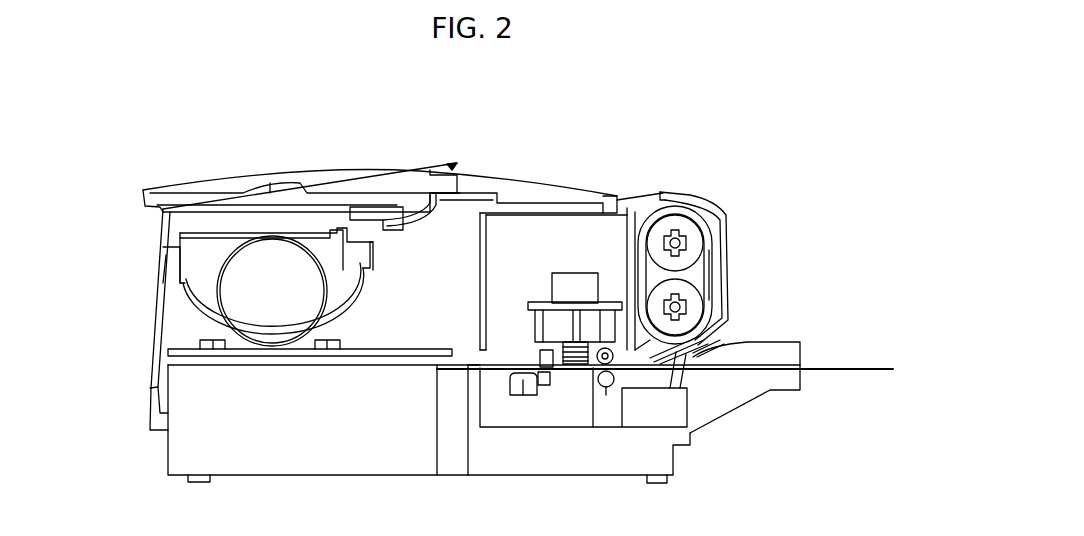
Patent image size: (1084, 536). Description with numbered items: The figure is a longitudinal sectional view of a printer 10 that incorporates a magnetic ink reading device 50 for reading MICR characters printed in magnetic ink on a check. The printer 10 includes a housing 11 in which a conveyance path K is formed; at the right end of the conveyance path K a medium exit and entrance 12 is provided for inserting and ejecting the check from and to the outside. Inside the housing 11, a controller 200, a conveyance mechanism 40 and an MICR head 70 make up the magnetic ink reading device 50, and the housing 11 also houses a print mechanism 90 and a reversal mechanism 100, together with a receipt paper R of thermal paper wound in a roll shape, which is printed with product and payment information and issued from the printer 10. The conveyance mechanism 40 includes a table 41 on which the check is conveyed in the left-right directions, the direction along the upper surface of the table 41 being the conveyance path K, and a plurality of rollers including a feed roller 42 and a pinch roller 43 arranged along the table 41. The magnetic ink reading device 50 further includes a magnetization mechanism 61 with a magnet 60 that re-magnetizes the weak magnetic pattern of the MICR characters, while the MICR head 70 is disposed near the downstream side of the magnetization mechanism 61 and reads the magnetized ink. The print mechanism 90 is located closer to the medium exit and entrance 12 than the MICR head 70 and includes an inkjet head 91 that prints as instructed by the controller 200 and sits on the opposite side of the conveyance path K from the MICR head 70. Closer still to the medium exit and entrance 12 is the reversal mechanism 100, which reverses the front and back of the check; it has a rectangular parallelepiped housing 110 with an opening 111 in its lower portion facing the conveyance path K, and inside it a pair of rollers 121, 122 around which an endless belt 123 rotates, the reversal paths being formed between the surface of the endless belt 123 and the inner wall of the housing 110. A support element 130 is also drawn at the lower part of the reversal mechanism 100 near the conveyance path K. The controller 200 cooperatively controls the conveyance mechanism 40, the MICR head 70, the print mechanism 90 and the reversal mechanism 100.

The printer 10 is at (408, 166).
The housing 11 is at (170, 318).
The receipt paper R is at (230, 282).
The reversal mechanism 100 is at (715, 275).
The housing 110 is at (710, 205).
The opening 111 is at (725, 318).
The medium exit and entrance 12 is at (695, 352).
The roller 121 is at (703, 305).
The roller 122 is at (703, 245).
The endless belt 123 is at (710, 270).
The support 130 is at (653, 350).
The controller 200 is at (572, 280).
The print mechanism 90 is at (537, 326).
The inkjet head 91 is at (562, 352).
The feed roller 42 is at (602, 348).
The pinch roller 43 is at (608, 388).
The table 41 is at (671, 386).
The conveyance mechanism 40 is at (712, 380).
The conveyance path K is at (482, 352).
The MICR head 70 is at (508, 384).
The magnetic ink reading device 50 is at (523, 398).
The magnet 60 is at (546, 387).
The magnetization mechanism 61 is at (552, 380).